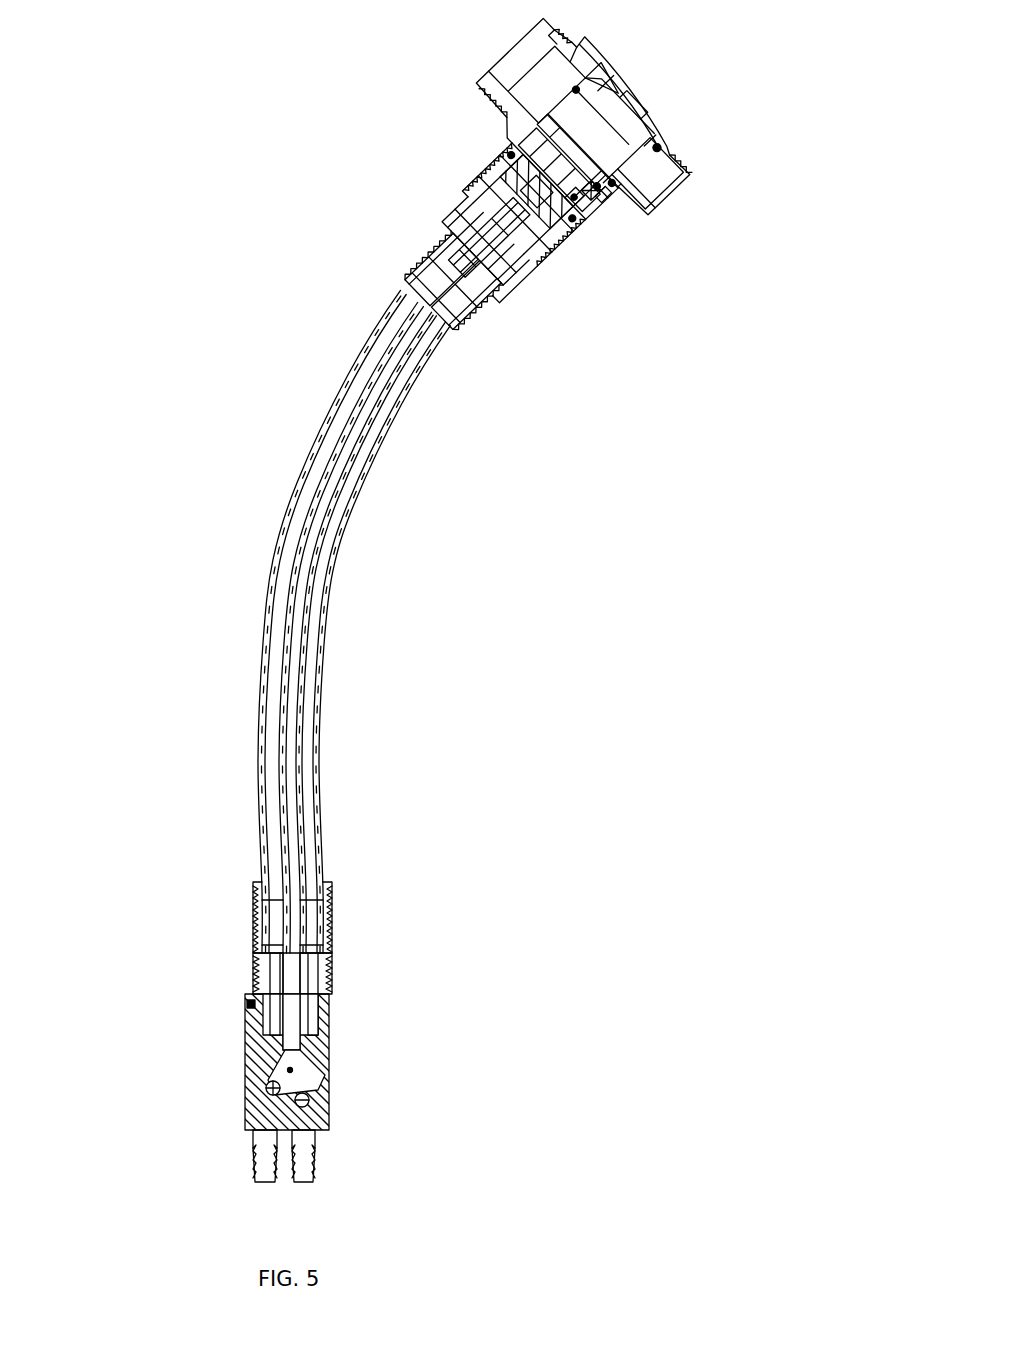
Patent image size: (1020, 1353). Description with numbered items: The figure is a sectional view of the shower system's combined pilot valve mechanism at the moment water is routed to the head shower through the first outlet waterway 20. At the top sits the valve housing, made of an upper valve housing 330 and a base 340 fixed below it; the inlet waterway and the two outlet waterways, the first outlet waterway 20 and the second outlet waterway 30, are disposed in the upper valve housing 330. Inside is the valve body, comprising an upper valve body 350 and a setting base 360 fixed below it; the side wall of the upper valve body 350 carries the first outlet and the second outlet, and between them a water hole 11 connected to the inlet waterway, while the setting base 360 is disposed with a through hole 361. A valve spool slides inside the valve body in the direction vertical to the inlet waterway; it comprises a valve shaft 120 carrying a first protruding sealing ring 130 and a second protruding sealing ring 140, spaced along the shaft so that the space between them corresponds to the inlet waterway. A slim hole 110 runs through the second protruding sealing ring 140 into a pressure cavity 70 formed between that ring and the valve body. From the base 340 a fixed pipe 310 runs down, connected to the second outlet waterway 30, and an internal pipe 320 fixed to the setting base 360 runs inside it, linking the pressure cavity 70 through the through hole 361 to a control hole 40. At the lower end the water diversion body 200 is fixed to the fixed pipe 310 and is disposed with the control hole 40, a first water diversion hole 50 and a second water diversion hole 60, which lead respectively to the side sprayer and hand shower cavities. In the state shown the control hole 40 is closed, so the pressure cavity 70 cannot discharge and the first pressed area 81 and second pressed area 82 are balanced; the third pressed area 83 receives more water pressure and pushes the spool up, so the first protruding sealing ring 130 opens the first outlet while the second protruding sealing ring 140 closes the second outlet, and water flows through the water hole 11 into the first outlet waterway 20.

The water hole 11 is at (560, 125).
The first outlet waterway 20 is at (645, 165).
The second outlet waterway 30 is at (518, 273).
The control hole 40 is at (290, 1070).
The first water diversion hole 50 is at (310, 1098).
The second water diversion hole 60 is at (265, 1085).
The pressure cavity 70 is at (547, 200).
The first pressed area 81 is at (573, 198).
The second pressed area 82 is at (612, 182).
The third pressed area 83 is at (661, 146).
The slim hole 110 is at (592, 190).
The valve shaft 120 is at (600, 192).
The first protruding sealing ring 130 is at (638, 102).
The second protruding sealing ring 140 is at (597, 187).
The water diversion body 200 is at (255, 1110).
The fixed pipe 310 is at (297, 485).
The internal pipe 320 is at (293, 610).
The upper valve housing 330 is at (593, 58).
The base 340 is at (463, 195).
The upper valve body 350 is at (507, 154).
The setting base 360 is at (498, 292).
The through hole 361 is at (495, 233).